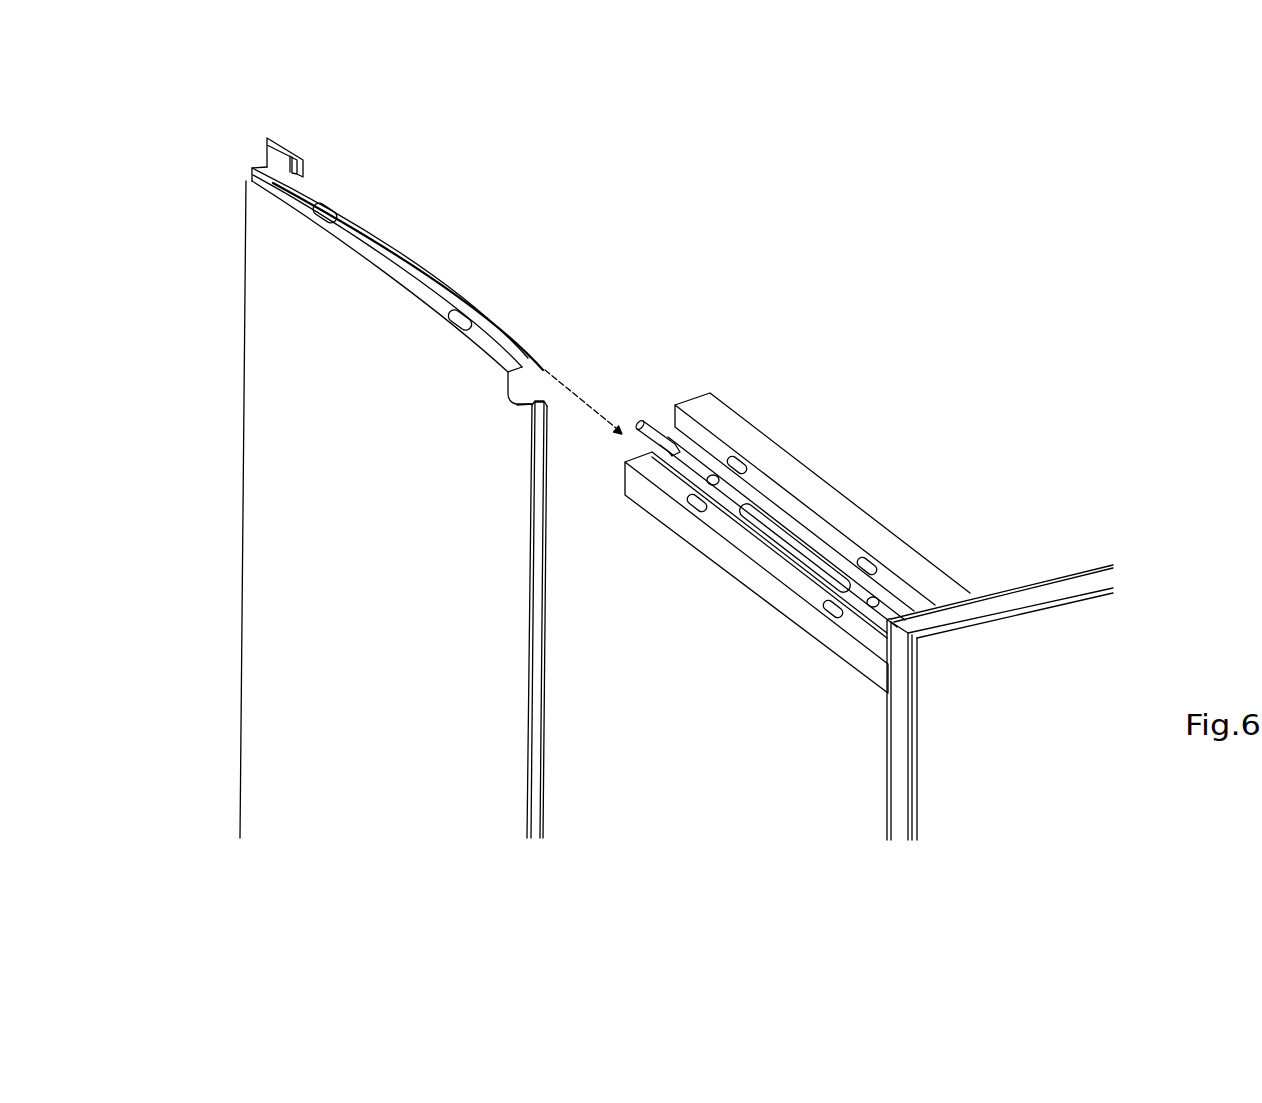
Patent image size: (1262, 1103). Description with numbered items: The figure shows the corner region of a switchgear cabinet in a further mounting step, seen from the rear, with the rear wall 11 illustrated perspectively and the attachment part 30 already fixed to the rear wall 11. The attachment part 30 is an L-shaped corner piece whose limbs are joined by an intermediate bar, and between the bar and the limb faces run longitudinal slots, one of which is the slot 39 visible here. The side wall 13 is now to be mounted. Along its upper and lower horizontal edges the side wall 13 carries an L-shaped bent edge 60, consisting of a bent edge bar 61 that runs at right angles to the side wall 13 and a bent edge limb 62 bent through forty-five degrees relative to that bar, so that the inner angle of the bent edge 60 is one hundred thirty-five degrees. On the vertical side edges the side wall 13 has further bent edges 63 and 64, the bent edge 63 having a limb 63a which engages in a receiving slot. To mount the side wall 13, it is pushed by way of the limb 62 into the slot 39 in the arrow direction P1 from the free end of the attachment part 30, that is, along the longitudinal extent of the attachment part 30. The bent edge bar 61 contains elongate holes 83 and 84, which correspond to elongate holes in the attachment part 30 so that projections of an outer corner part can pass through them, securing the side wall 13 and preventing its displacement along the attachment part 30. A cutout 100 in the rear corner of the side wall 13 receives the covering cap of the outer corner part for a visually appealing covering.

The rear wall 11 is at (1028, 690).
The side wall 13 is at (370, 703).
The attachment part 30 is at (893, 543).
The slot 39 is at (760, 533).
The bent edge 60 is at (439, 244).
The bent edge bar 61 is at (493, 340).
The bent edge limb 62 is at (543, 368).
The bent edge 63 is at (582, 619).
The limb 63a is at (543, 422).
The bent edge 64 is at (283, 148).
The elongate hole 83 is at (327, 207).
The elongate hole 84 is at (458, 312).
The cutout 100 is at (512, 392).
The arrow direction P1 is at (590, 396).